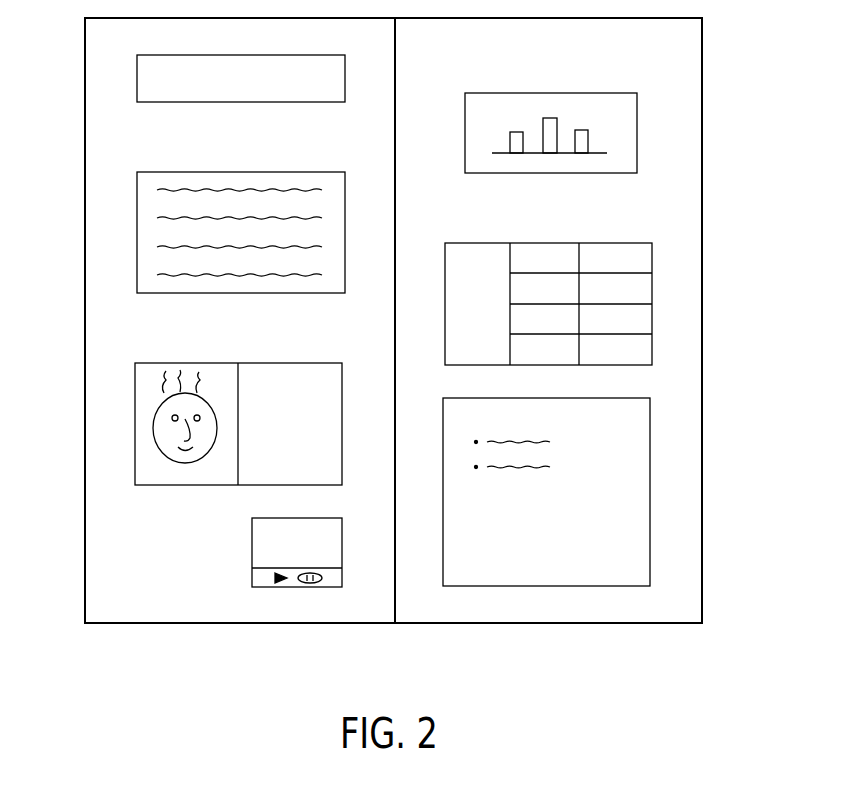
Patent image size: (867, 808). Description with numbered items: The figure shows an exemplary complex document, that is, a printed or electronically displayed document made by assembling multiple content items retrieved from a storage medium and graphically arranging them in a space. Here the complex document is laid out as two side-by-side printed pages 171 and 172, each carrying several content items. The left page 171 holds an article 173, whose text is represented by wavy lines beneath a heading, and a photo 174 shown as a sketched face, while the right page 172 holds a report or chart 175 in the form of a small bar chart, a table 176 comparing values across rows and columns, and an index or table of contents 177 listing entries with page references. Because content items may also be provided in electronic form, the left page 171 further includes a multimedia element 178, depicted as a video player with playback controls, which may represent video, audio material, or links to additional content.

The printed page 171 is at (123, 609).
The printed page 172 is at (548, 610).
The article 173 is at (148, 230).
The photo 174 is at (150, 465).
The report or chart 175 is at (623, 130).
The table 176 is at (635, 318).
The index or table of contents 177 is at (635, 415).
The multimedia element 178 is at (262, 578).